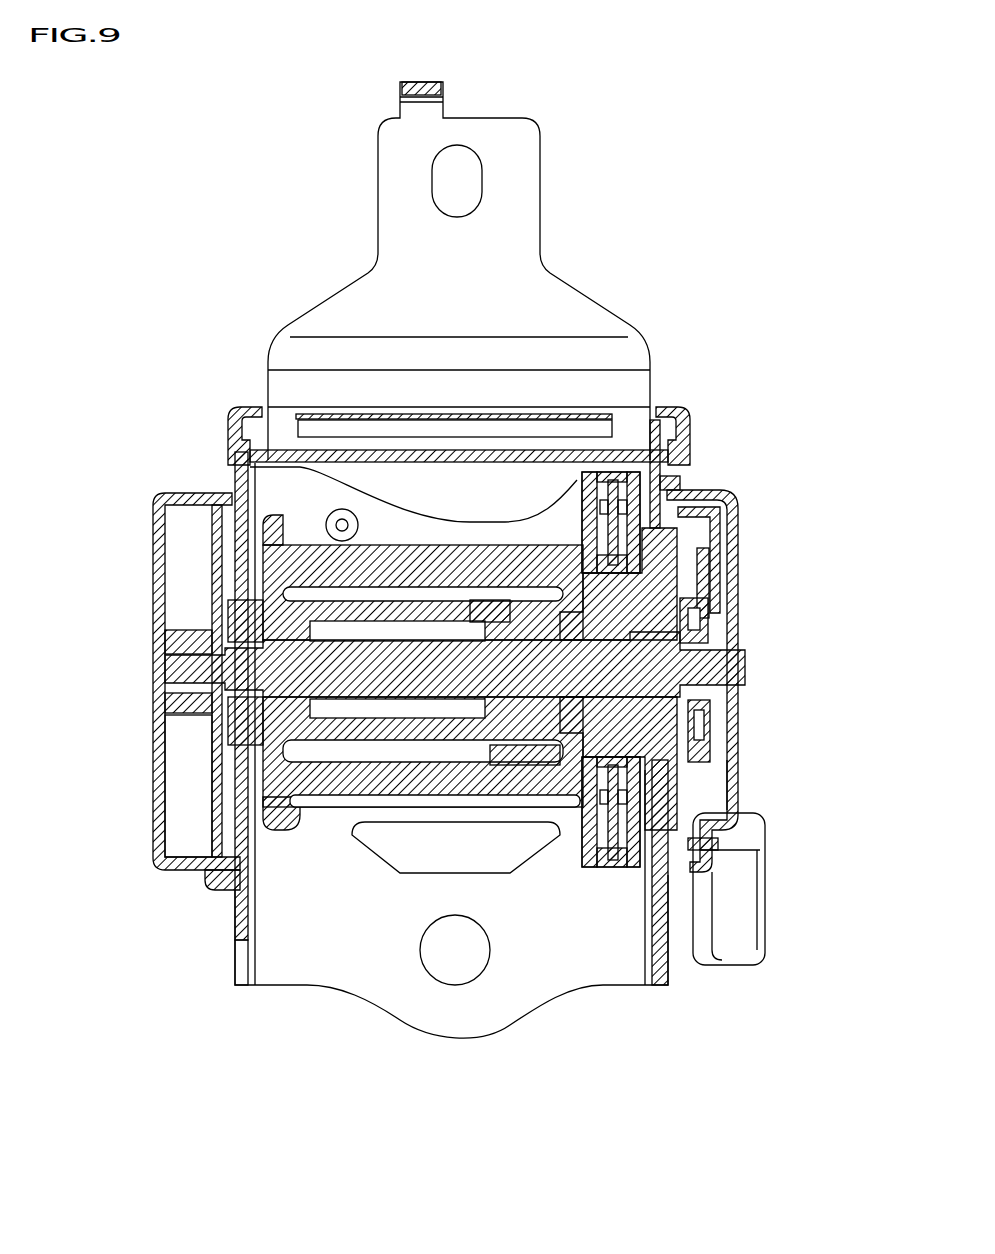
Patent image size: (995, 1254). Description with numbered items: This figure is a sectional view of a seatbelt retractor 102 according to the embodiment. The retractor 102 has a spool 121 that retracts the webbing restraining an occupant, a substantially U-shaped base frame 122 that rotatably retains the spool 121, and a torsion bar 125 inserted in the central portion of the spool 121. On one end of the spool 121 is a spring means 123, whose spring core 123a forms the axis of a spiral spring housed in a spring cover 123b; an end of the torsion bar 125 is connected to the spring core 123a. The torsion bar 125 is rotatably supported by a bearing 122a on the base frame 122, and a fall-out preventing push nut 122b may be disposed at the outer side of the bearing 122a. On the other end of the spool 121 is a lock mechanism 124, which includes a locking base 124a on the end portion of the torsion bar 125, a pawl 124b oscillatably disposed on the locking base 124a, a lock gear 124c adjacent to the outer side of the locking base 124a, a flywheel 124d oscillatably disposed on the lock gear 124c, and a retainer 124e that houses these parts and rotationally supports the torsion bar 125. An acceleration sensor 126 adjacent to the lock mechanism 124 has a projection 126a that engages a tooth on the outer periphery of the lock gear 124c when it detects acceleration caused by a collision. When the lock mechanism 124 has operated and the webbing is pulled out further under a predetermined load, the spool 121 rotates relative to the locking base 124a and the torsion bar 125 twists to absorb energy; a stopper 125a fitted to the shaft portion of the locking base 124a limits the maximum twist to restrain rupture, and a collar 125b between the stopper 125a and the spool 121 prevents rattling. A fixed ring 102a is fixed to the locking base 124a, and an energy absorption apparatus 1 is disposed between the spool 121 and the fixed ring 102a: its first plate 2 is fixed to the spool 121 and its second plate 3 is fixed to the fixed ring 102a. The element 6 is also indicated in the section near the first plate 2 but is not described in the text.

The energy absorption apparatus 1 is at (580, 872).
The first plate 2 is at (578, 482).
The second plate 3 is at (423, 661).
The terminal plate 6 is at (630, 470).
The seatbelt retractor 102 is at (716, 320).
The fixed ring 102a is at (610, 605).
The spool 121 is at (453, 543).
The base frame 122 is at (248, 918).
The bearing 122a is at (295, 720).
The push nut 122b is at (214, 705).
The spring means 123 is at (150, 551).
The spring core 123a is at (196, 630).
The spring cover 123b is at (153, 762).
The lock mechanism 124 is at (740, 468).
The locking base 124a is at (718, 606).
The pawl 124b is at (718, 563).
The lock gear 124c is at (736, 516).
The flywheel 124d is at (736, 736).
The retainer 124e is at (740, 778).
The torsion bar 125 is at (450, 682).
The stopper 125a is at (518, 745).
The collar 125b is at (493, 600).
The acceleration sensor 126 is at (768, 892).
The projection 126a is at (722, 842).